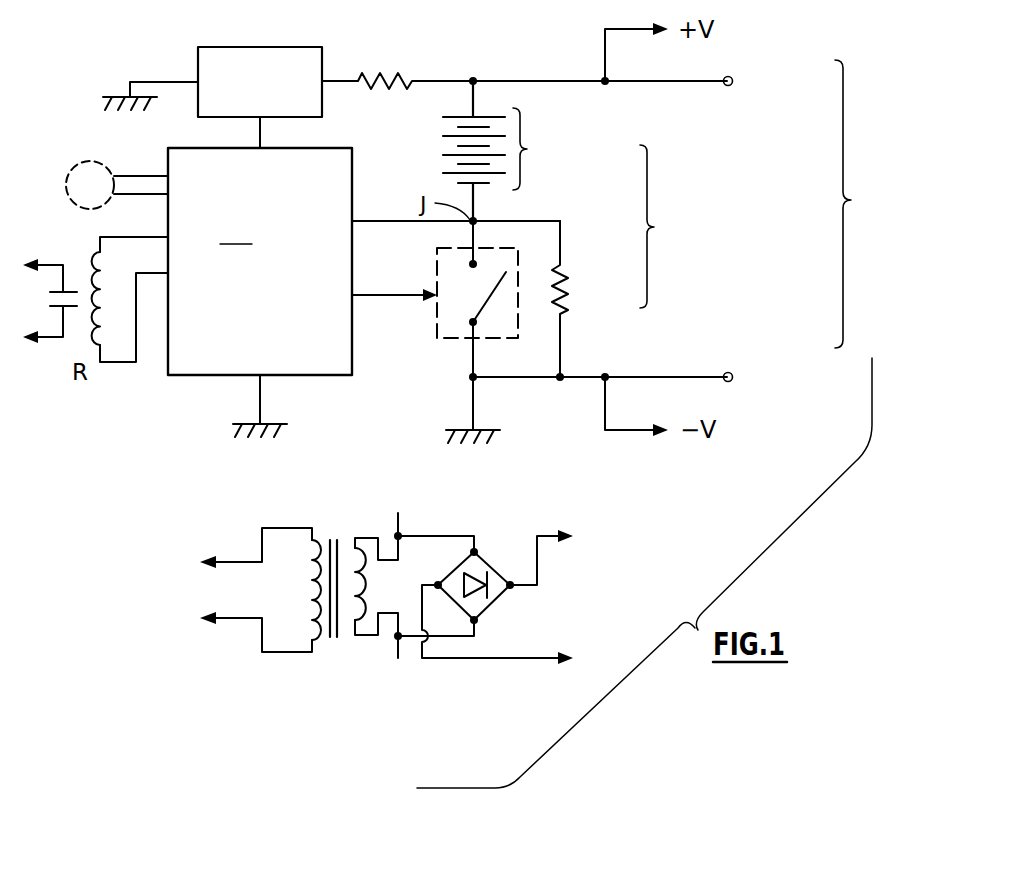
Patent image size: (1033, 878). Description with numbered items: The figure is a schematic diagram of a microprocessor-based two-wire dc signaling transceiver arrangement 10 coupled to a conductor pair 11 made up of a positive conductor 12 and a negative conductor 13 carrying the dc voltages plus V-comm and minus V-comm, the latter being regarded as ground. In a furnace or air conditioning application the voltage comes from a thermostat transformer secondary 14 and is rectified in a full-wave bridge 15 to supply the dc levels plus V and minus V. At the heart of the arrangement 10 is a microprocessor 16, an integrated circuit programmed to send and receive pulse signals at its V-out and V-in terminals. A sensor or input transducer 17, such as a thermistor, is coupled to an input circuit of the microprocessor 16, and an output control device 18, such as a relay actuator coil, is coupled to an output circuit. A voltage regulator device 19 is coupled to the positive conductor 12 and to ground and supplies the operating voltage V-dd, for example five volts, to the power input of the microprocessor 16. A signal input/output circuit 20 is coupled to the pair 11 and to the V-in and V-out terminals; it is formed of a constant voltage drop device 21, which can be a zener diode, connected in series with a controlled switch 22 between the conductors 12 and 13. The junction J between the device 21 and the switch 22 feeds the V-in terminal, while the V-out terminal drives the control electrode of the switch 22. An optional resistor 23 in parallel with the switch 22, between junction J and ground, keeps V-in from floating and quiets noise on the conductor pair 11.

The two-wire dc transceiver arrangement 10 is at (152, 422).
The conductor pair 11 is at (863, 204).
The positive conductor 12 is at (665, 81).
The negative conductor 13 is at (645, 377).
The thermostat transformer secondary 14 is at (333, 650).
The full-wave bridge 15 is at (498, 666).
The microprocessor 16 is at (290, 378).
The sensor or input transducer 17 is at (76, 168).
The output control device 18 is at (73, 270).
The voltage regulator device 19 is at (218, 47).
The signal input/output circuit 20 is at (665, 226).
The constant voltage drop device 21 is at (440, 150).
The controlled switch 22 is at (446, 340).
The resistor 23 is at (564, 276).